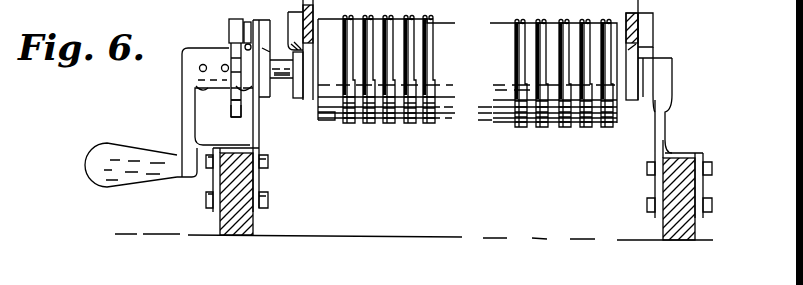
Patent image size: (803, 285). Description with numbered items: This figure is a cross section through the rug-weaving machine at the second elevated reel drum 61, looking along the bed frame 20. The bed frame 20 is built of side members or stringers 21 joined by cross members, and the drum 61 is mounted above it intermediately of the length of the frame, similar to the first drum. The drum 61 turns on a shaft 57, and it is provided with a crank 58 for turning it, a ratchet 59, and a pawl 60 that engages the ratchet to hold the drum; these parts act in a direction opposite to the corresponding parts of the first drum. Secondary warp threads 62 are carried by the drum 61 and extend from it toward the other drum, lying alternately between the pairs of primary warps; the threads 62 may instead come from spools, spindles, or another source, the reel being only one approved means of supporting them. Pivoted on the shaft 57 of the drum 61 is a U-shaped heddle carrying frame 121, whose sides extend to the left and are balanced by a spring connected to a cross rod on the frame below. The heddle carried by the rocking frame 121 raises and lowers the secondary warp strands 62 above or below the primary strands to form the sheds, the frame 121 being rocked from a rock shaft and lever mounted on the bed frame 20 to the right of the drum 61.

The bed frame 20 is at (218, 219).
The side members or stringers 21 is at (414, 225).
The shaft of the warp drum 57 is at (278, 84).
The crank 58 is at (138, 151).
The ratchet 59 is at (240, 118).
The pawl 60 is at (229, 30).
The elevated reel drum 61 is at (336, 110).
The secondary warp threads 62 is at (428, 131).
The U-shaped heddle carrying frame 121 is at (306, 86).